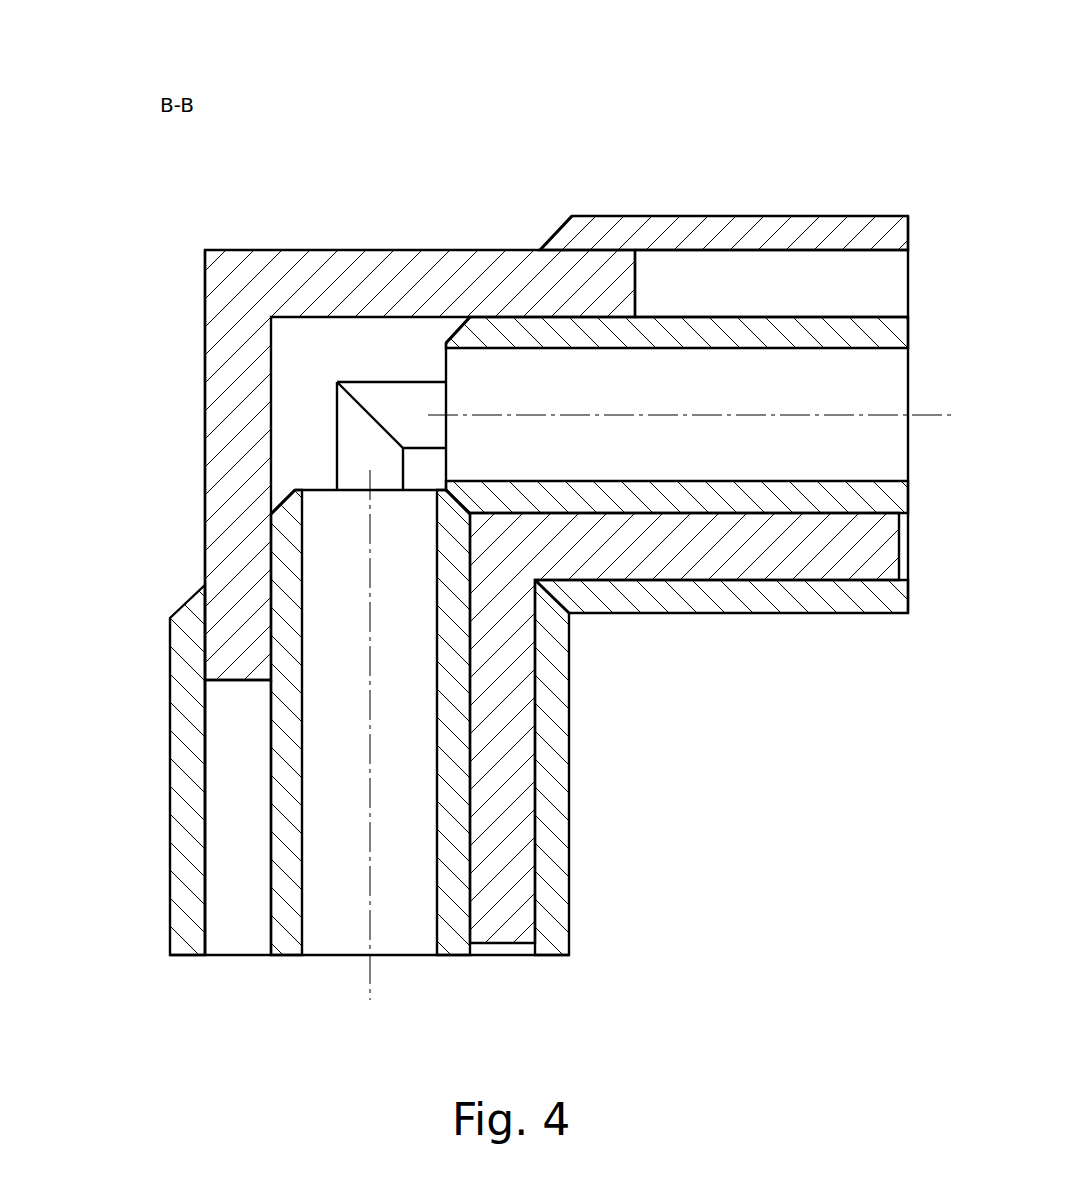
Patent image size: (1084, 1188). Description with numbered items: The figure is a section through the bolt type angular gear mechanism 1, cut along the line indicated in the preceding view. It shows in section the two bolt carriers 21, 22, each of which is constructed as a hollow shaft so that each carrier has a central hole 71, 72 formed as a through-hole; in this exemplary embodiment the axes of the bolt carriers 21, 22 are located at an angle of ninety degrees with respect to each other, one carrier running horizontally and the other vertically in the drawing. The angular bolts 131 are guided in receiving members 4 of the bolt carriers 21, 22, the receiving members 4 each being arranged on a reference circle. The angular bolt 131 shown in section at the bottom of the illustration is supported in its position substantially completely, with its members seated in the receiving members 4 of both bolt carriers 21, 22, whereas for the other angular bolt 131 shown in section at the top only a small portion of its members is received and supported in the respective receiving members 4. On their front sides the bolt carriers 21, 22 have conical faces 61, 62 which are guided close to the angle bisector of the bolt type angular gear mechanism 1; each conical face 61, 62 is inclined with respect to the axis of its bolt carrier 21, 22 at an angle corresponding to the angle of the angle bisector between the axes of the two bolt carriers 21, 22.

The bolt type angular gear mechanism 1 is at (832, 158).
The receiving member 4 is at (855, 285).
The bolt carrier 21 is at (658, 215).
The bolt carrier 22 is at (168, 768).
The conical face 61 is at (553, 235).
The conical face 62 is at (280, 495).
The central hole 71 is at (735, 483).
The central hole 72 is at (300, 680).
The angular bolt 131 is at (365, 381).